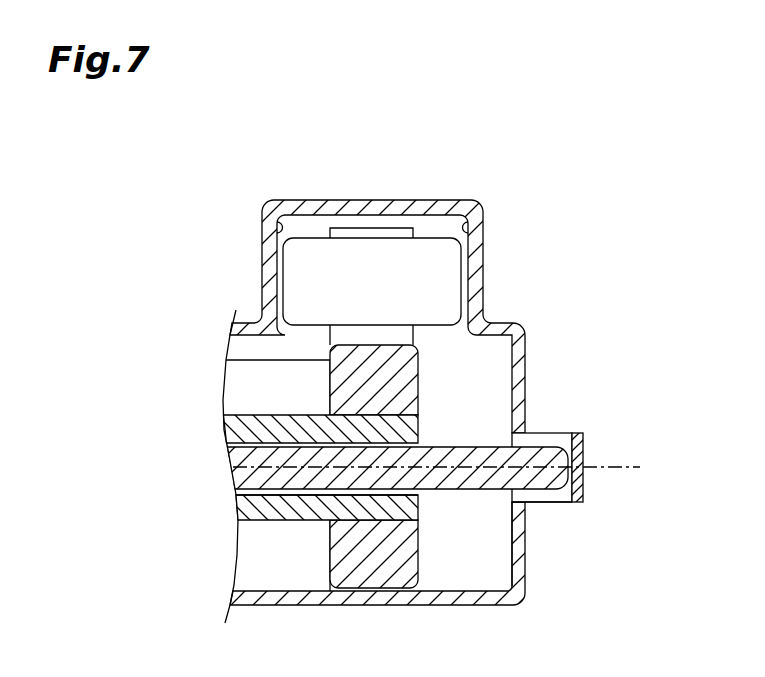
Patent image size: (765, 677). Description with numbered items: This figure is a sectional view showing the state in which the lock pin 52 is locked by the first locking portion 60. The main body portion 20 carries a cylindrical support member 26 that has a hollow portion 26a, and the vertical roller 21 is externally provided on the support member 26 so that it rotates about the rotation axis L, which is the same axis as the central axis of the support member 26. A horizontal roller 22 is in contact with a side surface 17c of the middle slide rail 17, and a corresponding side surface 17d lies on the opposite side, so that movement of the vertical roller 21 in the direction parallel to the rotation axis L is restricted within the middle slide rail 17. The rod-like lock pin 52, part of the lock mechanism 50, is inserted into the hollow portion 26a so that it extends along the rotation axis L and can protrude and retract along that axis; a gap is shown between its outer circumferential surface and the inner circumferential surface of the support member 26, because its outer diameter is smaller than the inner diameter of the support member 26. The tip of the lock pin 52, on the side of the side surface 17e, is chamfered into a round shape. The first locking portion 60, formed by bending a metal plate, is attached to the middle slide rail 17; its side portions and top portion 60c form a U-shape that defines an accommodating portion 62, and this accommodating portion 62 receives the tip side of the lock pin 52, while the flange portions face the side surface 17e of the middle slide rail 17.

The middle slide rail 17 is at (394, 358).
The side surface 17c is at (283, 226).
The side surface 17d is at (466, 229).
The side surface 17e is at (505, 550).
The main body portion 20 is at (238, 380).
The vertical roller 21 is at (402, 365).
The horizontal roller 22 is at (430, 253).
The support member 26 is at (321, 534).
The hollow portion 26a is at (294, 492).
The lock pin 52 is at (427, 421).
The shaft assembly 50 is at (538, 452).
The first locking portion 60 is at (588, 483).
The top portion 60c is at (583, 488).
The accommodating portion 62 is at (549, 498).
The rotation axis L is at (610, 468).